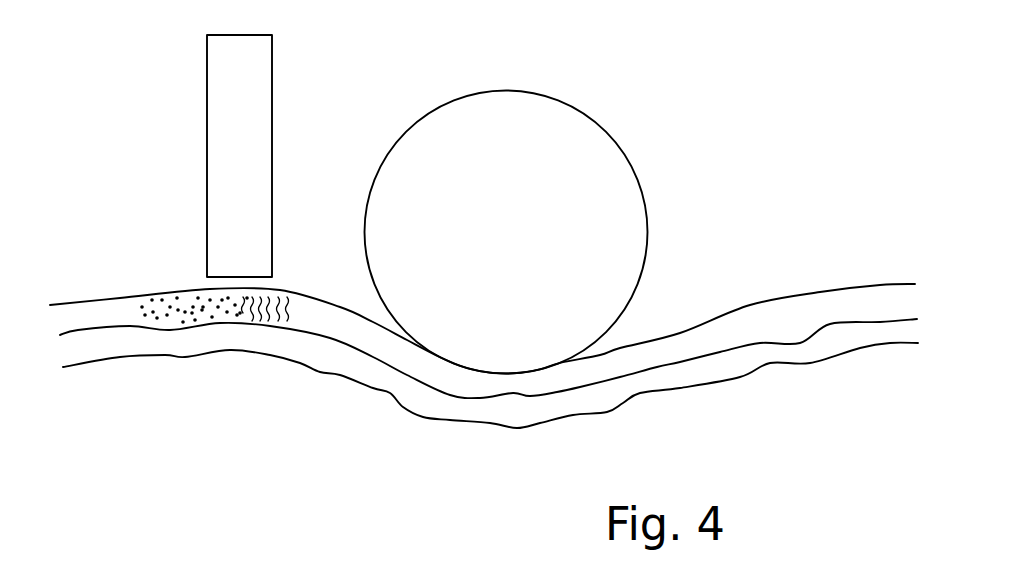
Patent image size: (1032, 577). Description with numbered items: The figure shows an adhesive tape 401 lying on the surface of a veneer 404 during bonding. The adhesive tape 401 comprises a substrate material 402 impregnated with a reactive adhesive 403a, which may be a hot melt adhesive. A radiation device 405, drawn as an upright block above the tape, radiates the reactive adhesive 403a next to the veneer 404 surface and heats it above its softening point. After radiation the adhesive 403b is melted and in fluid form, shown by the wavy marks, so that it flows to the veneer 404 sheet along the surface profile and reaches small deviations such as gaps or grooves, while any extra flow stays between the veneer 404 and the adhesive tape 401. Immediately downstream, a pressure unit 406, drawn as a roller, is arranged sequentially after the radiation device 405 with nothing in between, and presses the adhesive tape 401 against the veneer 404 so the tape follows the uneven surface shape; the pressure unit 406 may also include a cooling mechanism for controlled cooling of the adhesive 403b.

The adhesive tape 401 is at (122, 297).
The substrate material 402 is at (78, 318).
The reactive adhesive 403a is at (186, 300).
The melted adhesive 403b is at (278, 302).
The veneer 404 is at (273, 348).
The radiation device 405 is at (262, 54).
The pressure unit 406 is at (625, 190).